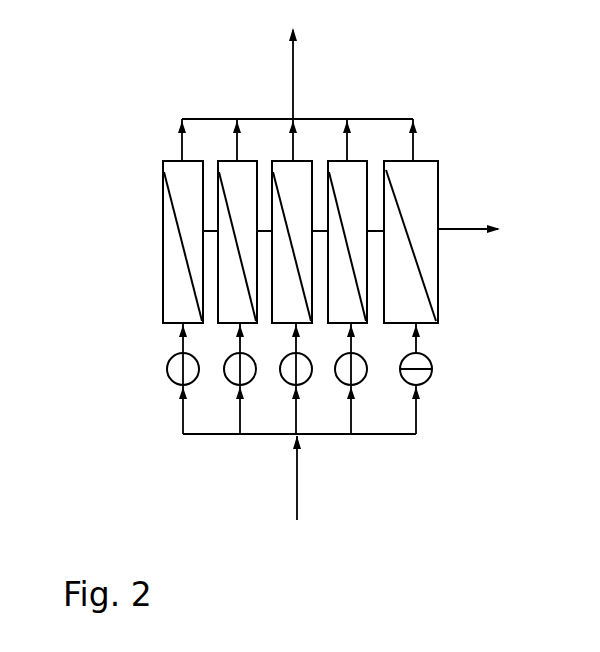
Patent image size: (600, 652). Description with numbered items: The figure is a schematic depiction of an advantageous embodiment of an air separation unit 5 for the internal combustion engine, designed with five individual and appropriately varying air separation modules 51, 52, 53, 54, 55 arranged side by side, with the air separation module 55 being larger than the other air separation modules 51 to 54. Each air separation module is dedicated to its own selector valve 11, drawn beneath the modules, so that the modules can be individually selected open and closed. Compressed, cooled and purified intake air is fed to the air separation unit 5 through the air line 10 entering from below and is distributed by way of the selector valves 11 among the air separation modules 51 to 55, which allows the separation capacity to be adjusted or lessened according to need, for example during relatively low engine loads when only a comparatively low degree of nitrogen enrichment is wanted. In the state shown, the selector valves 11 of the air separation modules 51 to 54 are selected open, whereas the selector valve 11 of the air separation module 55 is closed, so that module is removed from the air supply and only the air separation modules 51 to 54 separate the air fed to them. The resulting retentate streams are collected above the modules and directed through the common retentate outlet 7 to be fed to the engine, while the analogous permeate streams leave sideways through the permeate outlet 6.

The air separation unit 5 is at (124, 235).
The permeate outlet 6 is at (462, 229).
The common retentate outlet 7 is at (293, 64).
The air line 10 is at (298, 489).
The selector valve 11 is at (140, 356).
The air separation module 51 is at (178, 196).
The air separation module 52 is at (232, 196).
The air separation module 53 is at (287, 196).
The air separation module 54 is at (342, 196).
The air separation module 55 is at (408, 196).